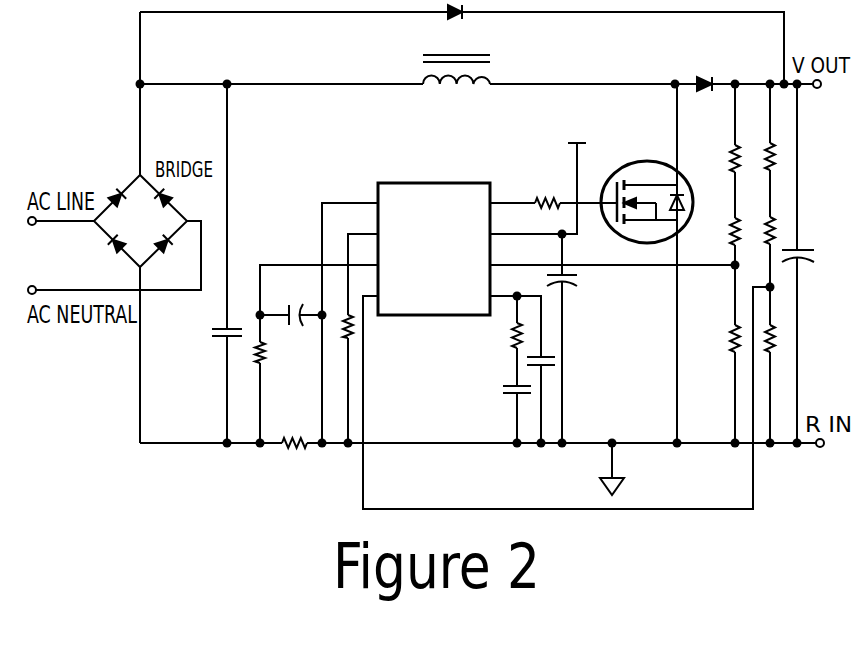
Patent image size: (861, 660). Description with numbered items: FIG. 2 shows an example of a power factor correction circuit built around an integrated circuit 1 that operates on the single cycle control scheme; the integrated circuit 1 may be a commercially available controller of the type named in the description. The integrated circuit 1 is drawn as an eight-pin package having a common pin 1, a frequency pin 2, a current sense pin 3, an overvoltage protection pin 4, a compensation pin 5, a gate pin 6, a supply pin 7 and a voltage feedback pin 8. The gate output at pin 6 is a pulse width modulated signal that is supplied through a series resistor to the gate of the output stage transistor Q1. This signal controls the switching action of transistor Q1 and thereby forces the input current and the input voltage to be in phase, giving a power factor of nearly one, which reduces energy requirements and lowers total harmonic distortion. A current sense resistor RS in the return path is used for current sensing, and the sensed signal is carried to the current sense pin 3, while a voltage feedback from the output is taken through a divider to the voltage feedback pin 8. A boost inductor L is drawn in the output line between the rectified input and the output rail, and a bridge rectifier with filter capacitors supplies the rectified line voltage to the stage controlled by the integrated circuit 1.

The integrated circuit 1 is at (443, 316).
The FREQ pin network 2 is at (360, 325).
The ISNS pin network 3 is at (316, 340).
The OVP pin connection 4 is at (566, 389).
The COMP pin compensation network 5 is at (522, 357).
The GATE pin drive resistor 6 is at (553, 193).
The VCC pin supply and capacitor 7 is at (540, 279).
The VFB pin feedback divider 8 is at (615, 263).
The output stage transistor Q1 is at (647, 190).
The boost inductor L is at (490, 62).
The current sense resistor RS is at (292, 460).